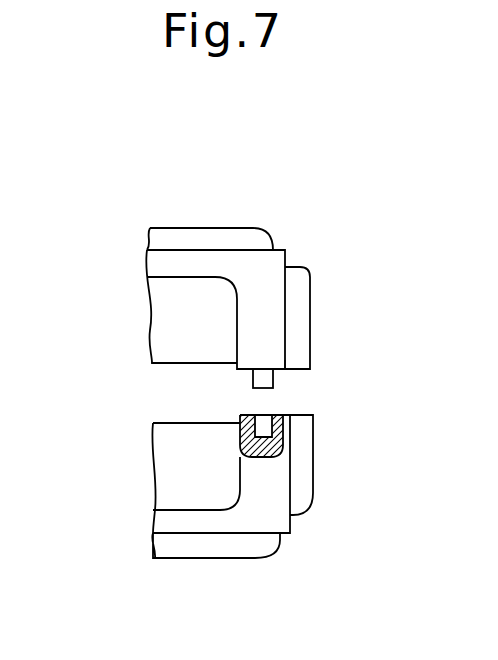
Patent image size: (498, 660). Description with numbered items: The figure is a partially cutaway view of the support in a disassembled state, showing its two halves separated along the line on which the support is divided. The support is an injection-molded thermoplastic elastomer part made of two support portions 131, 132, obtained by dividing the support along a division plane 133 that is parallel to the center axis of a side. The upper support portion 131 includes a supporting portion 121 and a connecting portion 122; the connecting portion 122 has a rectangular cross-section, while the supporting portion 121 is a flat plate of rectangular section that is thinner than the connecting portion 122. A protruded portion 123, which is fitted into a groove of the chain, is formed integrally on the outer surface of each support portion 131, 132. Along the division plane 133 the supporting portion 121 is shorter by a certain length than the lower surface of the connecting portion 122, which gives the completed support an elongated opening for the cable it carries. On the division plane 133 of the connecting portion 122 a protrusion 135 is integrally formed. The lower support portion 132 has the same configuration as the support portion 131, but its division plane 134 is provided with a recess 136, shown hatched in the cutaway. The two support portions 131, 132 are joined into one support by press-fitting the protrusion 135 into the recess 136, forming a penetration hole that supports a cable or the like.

The supporting portion 121 is at (160, 263).
The connecting portion 122 is at (167, 318).
The protruded portion 123 is at (262, 240).
The support portion 131 is at (209, 211).
The support portion 132 is at (277, 578).
The division plane 133 is at (298, 370).
The division plane 134 is at (242, 415).
The protrusion 135 is at (274, 385).
The recess 136 is at (262, 431).